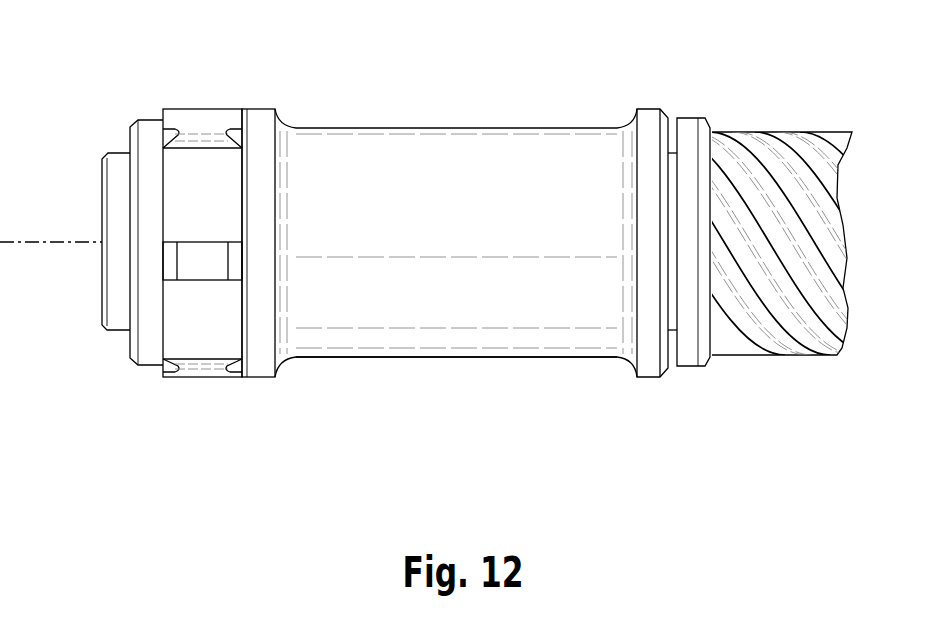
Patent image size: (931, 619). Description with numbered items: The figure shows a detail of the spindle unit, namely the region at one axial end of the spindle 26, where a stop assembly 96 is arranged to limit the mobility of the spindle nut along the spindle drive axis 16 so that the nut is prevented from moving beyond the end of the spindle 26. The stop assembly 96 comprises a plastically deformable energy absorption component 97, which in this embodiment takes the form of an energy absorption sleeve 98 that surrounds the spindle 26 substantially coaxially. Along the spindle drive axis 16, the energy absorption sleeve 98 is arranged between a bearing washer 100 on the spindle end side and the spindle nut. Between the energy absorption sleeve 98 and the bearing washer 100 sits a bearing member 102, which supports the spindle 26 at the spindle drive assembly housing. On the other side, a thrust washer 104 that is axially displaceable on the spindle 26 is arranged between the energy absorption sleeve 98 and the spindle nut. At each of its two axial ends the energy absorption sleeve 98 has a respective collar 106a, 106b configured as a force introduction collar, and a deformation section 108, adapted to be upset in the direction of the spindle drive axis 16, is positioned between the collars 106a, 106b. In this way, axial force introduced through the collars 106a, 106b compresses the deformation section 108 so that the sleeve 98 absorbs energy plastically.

The spindle drive axis 16 is at (48, 238).
The spindle 26 is at (745, 310).
The stop assembly 96 is at (473, 392).
The plastically deformable energy absorption component 97 is at (365, 312).
The energy absorption sleeve 98 is at (392, 415).
The bearing washer 100 is at (150, 127).
The bearing member 102 is at (200, 120).
The thrust washer 104 is at (690, 133).
The collar 106a is at (262, 120).
The collar 106b is at (647, 127).
The deformation section 108 is at (475, 108).